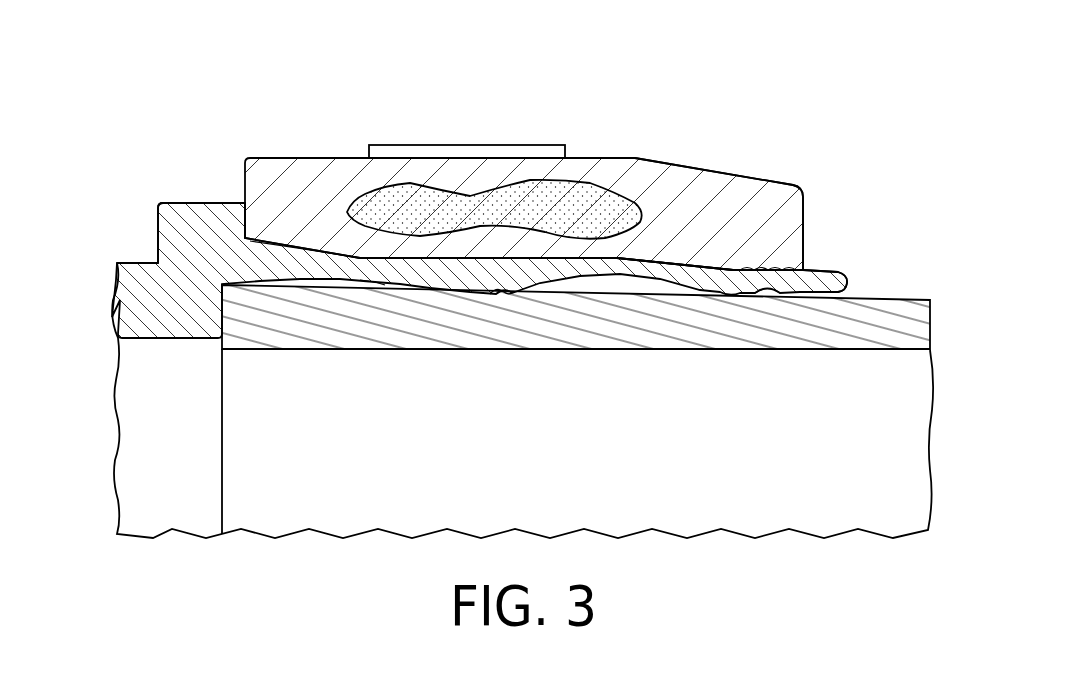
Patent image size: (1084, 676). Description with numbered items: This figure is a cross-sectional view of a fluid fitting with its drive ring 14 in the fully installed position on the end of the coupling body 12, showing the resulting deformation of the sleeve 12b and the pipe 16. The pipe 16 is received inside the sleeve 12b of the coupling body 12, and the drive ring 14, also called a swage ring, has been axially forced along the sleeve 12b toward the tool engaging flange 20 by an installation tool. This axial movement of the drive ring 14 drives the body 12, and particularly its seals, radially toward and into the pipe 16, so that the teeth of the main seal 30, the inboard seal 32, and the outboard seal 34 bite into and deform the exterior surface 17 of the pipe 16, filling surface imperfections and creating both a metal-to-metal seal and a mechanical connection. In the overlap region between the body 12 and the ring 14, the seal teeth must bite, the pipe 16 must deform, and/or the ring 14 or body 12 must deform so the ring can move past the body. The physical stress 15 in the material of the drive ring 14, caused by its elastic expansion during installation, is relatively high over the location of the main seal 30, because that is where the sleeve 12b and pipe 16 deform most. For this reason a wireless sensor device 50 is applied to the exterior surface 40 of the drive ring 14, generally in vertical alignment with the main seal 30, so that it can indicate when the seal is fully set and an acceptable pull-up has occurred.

The coupling body 12 is at (127, 300).
The sleeve 12b is at (823, 273).
The drive ring 14 is at (710, 172).
The physical stress 15 is at (598, 180).
The pipe 16 is at (897, 300).
The exterior surface 17 is at (532, 302).
The tool engaging flange 20 is at (193, 215).
The main seal 30 is at (503, 293).
The inboard seal 32 is at (380, 284).
The outboard seal 34 is at (753, 295).
The exterior surface 40 is at (300, 157).
The sensor device 50 is at (450, 145).